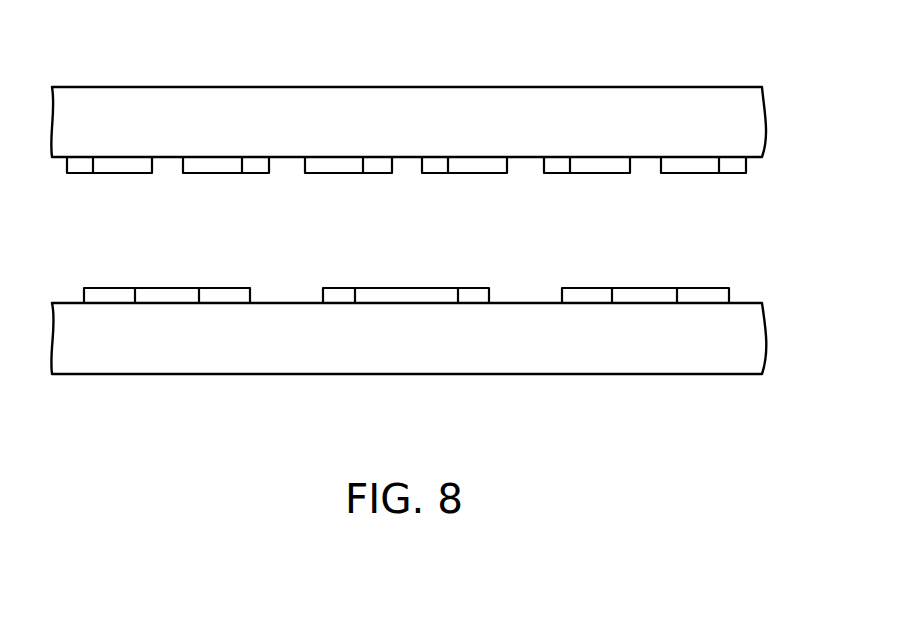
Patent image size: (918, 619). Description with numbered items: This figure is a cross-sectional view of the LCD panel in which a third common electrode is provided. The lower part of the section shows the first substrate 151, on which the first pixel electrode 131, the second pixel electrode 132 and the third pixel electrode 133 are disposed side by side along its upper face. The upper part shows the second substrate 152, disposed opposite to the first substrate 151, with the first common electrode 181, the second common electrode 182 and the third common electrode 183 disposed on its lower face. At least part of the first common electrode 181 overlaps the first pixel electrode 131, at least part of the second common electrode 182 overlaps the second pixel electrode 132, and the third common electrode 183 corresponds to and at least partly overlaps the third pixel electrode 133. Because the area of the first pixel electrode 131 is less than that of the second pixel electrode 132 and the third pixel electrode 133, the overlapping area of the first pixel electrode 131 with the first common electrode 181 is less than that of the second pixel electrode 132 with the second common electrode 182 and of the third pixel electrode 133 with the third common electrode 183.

The first pixel electrode 131 is at (175, 295).
The second pixel electrode 132 is at (407, 295).
The third pixel electrode 133 is at (650, 295).
The first substrate 151 is at (743, 365).
The second substrate 152 is at (657, 95).
The first common electrode 181 is at (83, 161).
The second common electrode 182 is at (343, 161).
The third common electrode 183 is at (562, 161).